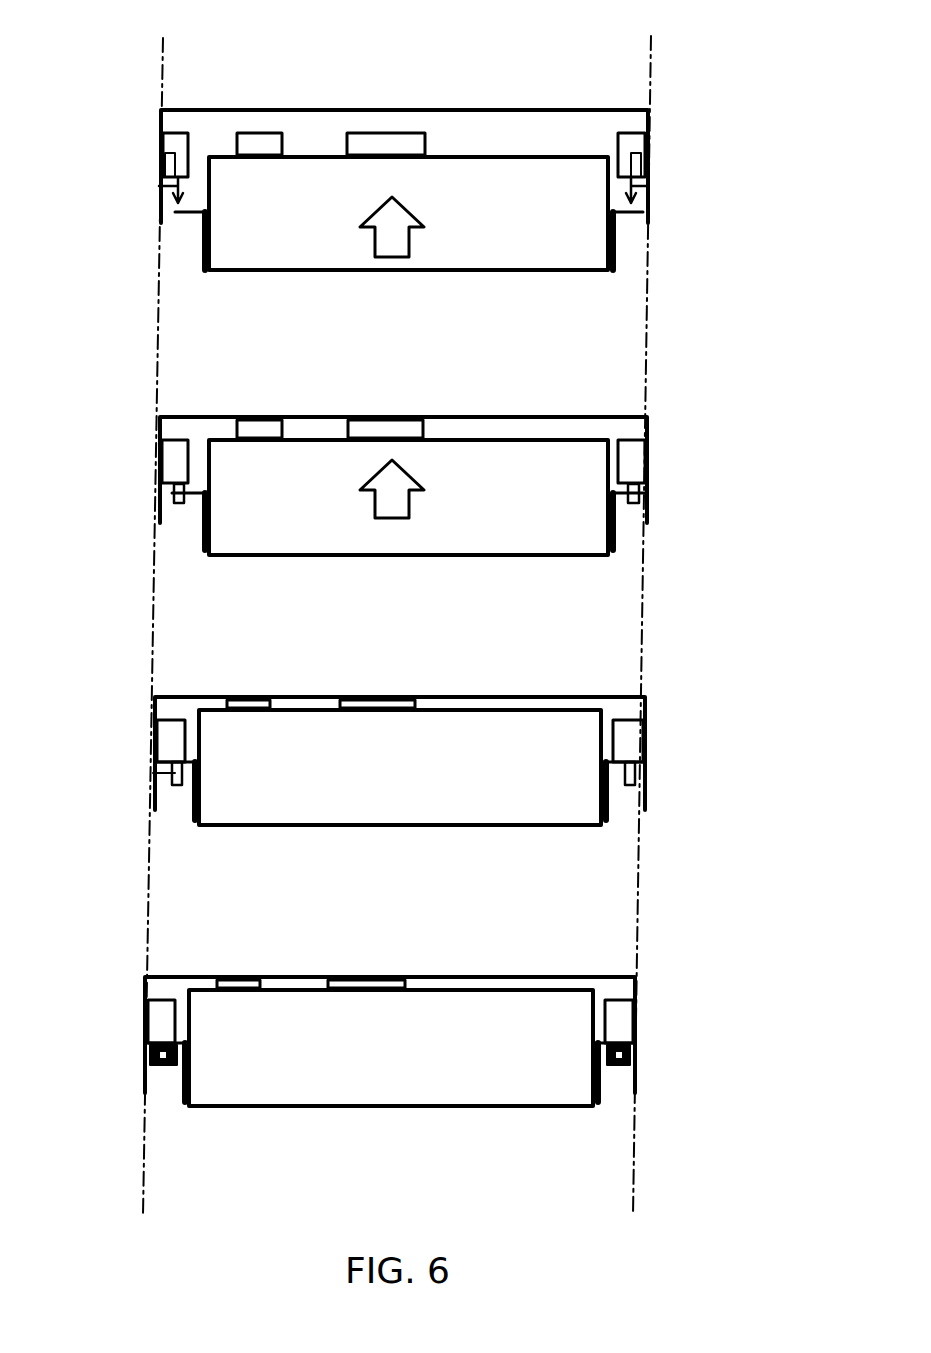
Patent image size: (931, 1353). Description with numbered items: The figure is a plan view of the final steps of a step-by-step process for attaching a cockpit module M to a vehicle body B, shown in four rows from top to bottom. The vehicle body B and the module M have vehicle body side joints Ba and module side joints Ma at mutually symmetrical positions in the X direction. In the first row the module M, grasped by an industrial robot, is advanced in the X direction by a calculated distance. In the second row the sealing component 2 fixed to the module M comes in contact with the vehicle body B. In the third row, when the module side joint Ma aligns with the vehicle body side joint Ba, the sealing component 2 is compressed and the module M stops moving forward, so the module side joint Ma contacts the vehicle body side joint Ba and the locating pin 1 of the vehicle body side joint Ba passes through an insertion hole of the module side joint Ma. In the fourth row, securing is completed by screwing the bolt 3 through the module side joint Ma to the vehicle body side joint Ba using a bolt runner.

The vehicle body B is at (305, 97).
The vehicle body side joint Ba is at (170, 160).
The locating pin 1 is at (168, 186).
The sealing component 2 is at (399, 145).
The bolt 3 is at (150, 1063).
The module M is at (559, 284).
The module side joint Ma is at (183, 215).